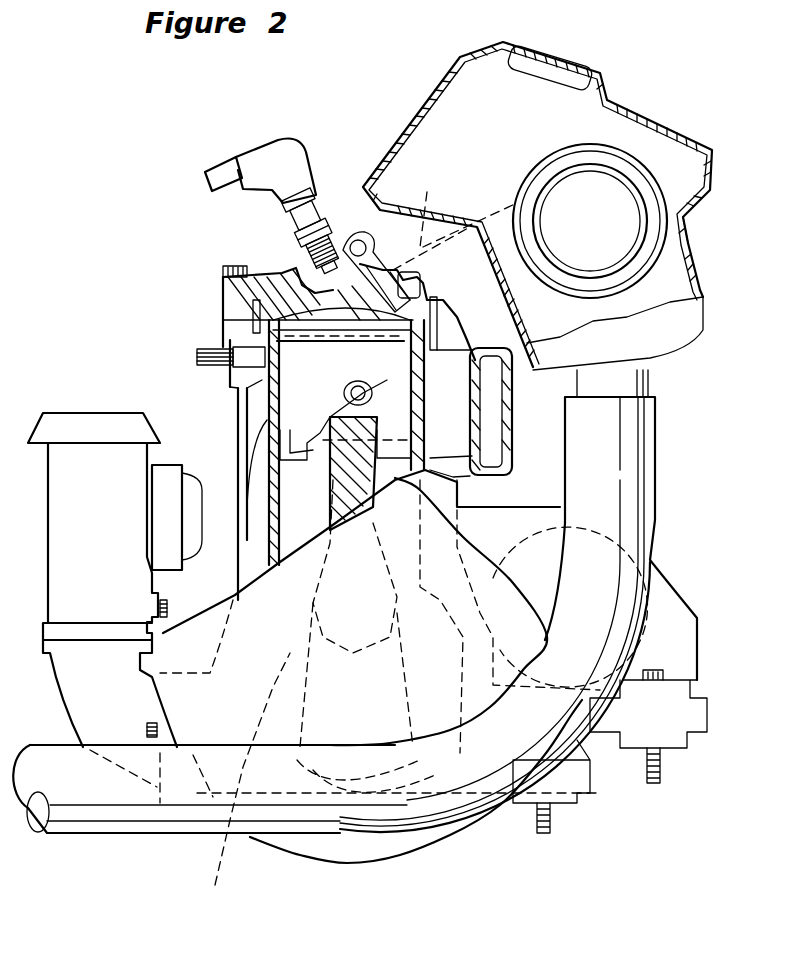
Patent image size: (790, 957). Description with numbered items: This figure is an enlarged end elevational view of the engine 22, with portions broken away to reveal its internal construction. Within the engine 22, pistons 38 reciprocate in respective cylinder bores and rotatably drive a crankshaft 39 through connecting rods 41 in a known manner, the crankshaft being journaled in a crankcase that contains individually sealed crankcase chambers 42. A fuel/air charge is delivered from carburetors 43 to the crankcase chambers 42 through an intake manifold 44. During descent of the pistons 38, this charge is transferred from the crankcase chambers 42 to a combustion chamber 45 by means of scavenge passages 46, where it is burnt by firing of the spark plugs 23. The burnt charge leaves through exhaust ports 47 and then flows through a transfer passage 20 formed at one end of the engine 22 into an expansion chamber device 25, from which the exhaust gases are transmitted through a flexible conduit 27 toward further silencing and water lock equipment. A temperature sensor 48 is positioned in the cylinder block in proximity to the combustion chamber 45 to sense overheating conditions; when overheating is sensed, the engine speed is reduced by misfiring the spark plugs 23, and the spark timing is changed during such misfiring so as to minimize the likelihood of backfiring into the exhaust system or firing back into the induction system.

The transfer passage 20 is at (537, 206).
The engine 22 is at (215, 426).
The spark plug 23 is at (310, 210).
The expansion chamber device 25 is at (707, 213).
The flexible conduit 27 is at (633, 452).
The piston 38 is at (317, 400).
The crankshaft 39 is at (310, 673).
The connecting rod 41 is at (376, 493).
The crankcase chamber 42 is at (345, 689).
The carburetor 43 is at (165, 555).
The intake manifold 44 is at (120, 747).
The combustion chamber 45 is at (313, 300).
The scavenge passage 46 is at (257, 485).
The exhaust port 47 is at (437, 410).
The temperature sensor 48 is at (243, 352).